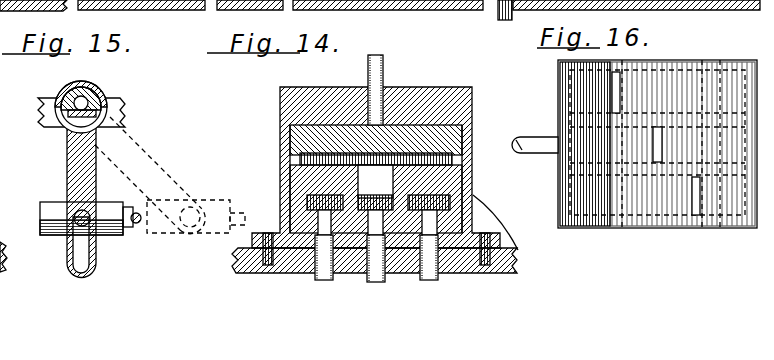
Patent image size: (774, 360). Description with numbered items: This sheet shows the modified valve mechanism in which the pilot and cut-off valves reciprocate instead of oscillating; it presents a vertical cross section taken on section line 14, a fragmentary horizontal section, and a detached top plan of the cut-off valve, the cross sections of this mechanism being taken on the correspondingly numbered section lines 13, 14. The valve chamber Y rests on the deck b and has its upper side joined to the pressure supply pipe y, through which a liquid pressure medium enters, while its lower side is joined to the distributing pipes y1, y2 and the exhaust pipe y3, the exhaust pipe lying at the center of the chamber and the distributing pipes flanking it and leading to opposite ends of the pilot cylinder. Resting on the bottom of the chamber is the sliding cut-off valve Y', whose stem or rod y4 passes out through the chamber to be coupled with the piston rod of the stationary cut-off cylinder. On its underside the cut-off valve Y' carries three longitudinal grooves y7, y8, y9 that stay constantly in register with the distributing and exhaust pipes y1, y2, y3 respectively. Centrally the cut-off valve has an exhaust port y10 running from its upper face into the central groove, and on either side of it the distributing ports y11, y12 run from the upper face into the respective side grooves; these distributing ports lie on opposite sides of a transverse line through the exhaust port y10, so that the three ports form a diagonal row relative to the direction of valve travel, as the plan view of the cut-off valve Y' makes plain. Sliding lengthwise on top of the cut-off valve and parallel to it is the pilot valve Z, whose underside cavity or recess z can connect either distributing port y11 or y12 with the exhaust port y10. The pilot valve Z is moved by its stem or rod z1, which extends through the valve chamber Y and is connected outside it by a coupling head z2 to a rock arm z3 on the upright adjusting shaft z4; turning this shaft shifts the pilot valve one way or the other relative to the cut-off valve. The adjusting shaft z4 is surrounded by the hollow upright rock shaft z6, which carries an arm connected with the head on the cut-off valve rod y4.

In FIG. 14, the section line 13 is at (143, 11).
In FIG. 14, the section line 14 is at (505, 20).
In FIG. 14, the deck b is at (517, 259).
In FIG. 14, the valve chamber Y is at (365, 167).
In FIG. 14, the pressure supply pipe y is at (384, 70).
In FIG. 14, the cavity or recess z is at (300, 150).
In FIG. 14, the pilot valve Z is at (450, 133).
In FIG. 14, the distributing pipe y1 is at (318, 278).
In FIG. 14, the distributing pipe y2 is at (433, 282).
In FIG. 14, the exhaust pipe y3 is at (380, 280).
In FIG. 14, the longitudinal groove y7 is at (263, 259).
In FIG. 14, the longitudinal groove y8 is at (472, 178).
In FIG. 14, the longitudinal groove y9 is at (368, 200).
In FIG. 14, the exhaust port y10 is at (375, 181).
In FIG. 16, the exhaust port y10 is at (662, 145).
In FIG. 14, the distributing port y11 is at (472, 193).
In FIG. 16, the distributing port y11 is at (620, 93).
In FIG. 14, the distributing port y12 is at (300, 178).
In FIG. 16, the distributing port y12 is at (700, 198).
In FIG. 15, the stem or rod z1 is at (138, 227).
In FIG. 15, the coupling head z2 is at (50, 210).
In FIG. 15, the rock arm z3 is at (104, 182).
In FIG. 15, the upright adjusting shaft z4 is at (103, 93).
In FIG. 15, the hollow upright rock shaft z6 is at (67, 89).
In FIG. 16, the stem or rod y4 is at (518, 140).
In FIG. 16, the sliding cut-off valve Y' is at (657, 165).